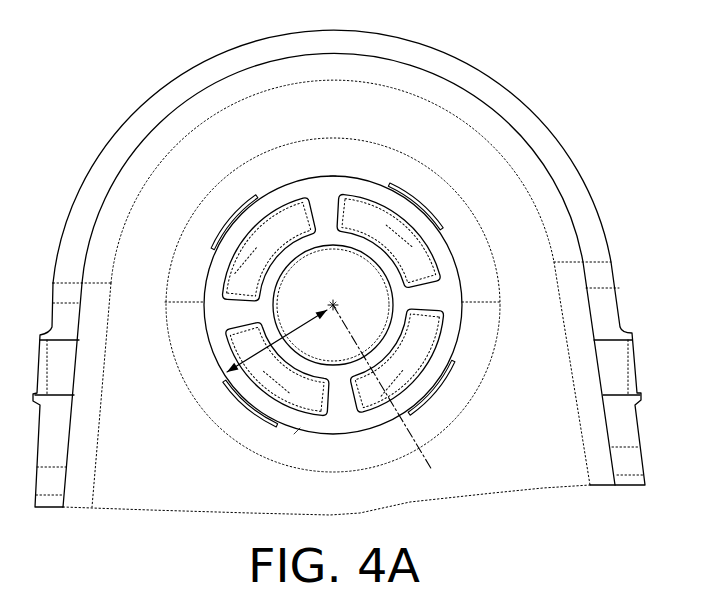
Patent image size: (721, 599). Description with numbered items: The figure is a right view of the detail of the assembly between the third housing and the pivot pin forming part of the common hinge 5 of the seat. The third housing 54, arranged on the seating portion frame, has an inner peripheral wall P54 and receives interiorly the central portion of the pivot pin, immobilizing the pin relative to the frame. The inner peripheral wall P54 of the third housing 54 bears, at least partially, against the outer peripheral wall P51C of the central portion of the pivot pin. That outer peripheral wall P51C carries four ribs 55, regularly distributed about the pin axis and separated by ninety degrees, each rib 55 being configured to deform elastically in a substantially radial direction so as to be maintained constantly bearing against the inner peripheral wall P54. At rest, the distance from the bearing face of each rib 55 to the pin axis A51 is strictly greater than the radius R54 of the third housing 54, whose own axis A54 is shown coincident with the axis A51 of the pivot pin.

The common hinge 5 is at (578, 82).
The third housing 54 is at (390, 177).
The rib 55 is at (425, 200).
The outer peripheral wall P51C is at (297, 431).
The inner peripheral wall P54 is at (327, 178).
The radius of the third housing R54 is at (275, 326).
The axis of the pivot pin A51 is at (380, 398).
The axis of the third housing A54 is at (401, 399).